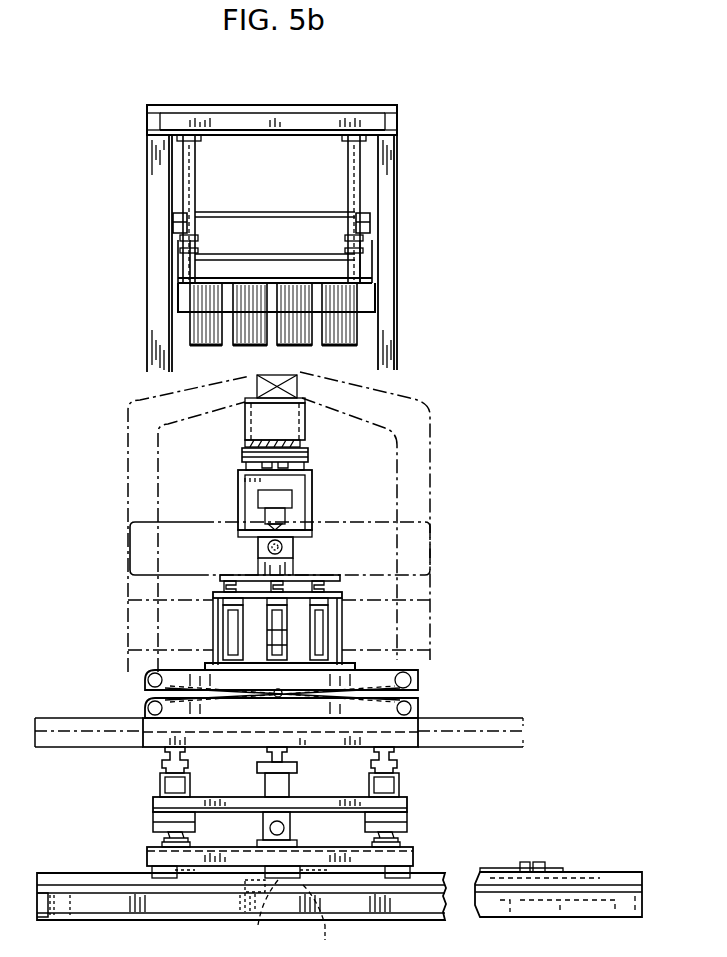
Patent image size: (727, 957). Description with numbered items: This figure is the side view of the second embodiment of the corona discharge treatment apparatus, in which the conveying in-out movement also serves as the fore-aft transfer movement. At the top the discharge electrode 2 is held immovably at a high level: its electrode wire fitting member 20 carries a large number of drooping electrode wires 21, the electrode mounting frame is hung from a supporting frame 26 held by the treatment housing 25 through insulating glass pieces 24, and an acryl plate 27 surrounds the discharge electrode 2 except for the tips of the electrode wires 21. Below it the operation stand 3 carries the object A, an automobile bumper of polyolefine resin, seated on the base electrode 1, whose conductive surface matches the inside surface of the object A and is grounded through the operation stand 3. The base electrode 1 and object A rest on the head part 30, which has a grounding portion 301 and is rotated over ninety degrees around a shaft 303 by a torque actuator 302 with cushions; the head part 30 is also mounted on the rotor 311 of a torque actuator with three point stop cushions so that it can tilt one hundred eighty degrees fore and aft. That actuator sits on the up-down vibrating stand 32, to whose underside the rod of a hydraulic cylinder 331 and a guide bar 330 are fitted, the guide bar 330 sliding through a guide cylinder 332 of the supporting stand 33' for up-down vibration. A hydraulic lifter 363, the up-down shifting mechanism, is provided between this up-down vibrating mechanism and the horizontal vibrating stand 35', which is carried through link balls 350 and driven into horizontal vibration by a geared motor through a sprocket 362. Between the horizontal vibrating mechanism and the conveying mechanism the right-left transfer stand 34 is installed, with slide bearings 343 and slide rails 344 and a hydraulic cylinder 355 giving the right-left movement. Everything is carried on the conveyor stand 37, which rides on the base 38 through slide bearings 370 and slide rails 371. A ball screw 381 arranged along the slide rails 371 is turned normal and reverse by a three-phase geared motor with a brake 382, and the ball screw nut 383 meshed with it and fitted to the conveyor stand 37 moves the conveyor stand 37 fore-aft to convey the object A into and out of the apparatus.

The treatment housing 25 is at (385, 185).
The supporting frame 26 is at (187, 182).
The insulating glass pieces 24 is at (187, 235).
The acryl plate 27 is at (175, 268).
The electrode wire fitting member 20 is at (340, 275).
The discharge electrode 2 is at (360, 292).
The electrode wires 21 is at (355, 333).
The head part 30 is at (160, 478).
The grounding portion 301 is at (305, 445).
The object A is at (300, 420).
The base electrode 1 is at (245, 440).
The shaft 303 is at (307, 452).
The torque actuator with cushions 302 is at (282, 482).
The rotor 311 is at (283, 547).
The up-down vibrating stand 32 is at (340, 578).
The operation stand 3 is at (205, 608).
The guide cylinder 332 is at (345, 597).
The supporting stand for up-down vibration 33' is at (355, 634).
The guide bar 330 is at (328, 625).
The hydraulic cylinder 331 is at (275, 655).
The hydraulic lifter 363 is at (420, 690).
The horizontal vibrating stand 35' is at (306, 723).
The link balls 350 is at (400, 762).
The sprocket 362 is at (297, 768).
The right-left transfer stand 34 is at (407, 803).
The slide bearings 343 is at (407, 822).
The hydraulic cylinder 355 is at (290, 832).
The slide rails 344 is at (400, 845).
The conveyor stand 37 is at (165, 860).
The slide bearings 370 is at (410, 872).
The base 38 is at (241, 884).
The slide rails 371 is at (100, 880).
The ball screw nut 383 is at (258, 925).
The ball screw 381 is at (297, 917).
The three-phase geared motor with a brake 382 is at (563, 865).